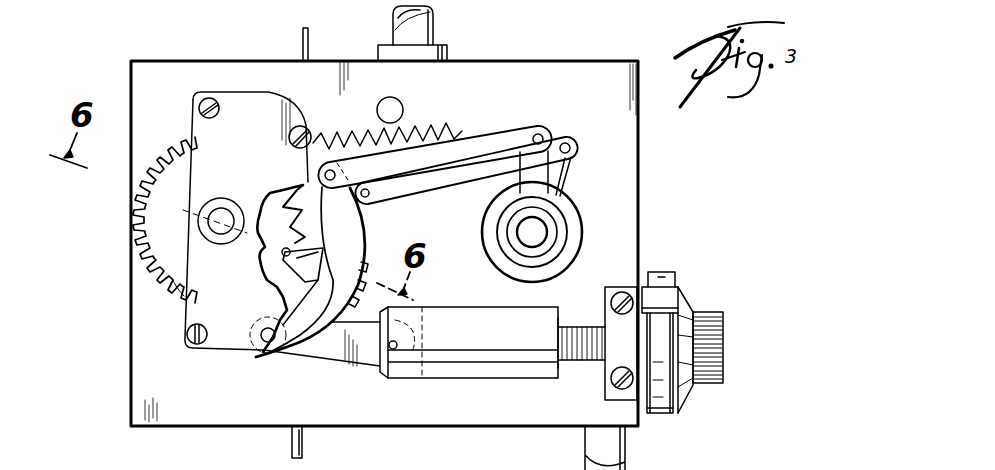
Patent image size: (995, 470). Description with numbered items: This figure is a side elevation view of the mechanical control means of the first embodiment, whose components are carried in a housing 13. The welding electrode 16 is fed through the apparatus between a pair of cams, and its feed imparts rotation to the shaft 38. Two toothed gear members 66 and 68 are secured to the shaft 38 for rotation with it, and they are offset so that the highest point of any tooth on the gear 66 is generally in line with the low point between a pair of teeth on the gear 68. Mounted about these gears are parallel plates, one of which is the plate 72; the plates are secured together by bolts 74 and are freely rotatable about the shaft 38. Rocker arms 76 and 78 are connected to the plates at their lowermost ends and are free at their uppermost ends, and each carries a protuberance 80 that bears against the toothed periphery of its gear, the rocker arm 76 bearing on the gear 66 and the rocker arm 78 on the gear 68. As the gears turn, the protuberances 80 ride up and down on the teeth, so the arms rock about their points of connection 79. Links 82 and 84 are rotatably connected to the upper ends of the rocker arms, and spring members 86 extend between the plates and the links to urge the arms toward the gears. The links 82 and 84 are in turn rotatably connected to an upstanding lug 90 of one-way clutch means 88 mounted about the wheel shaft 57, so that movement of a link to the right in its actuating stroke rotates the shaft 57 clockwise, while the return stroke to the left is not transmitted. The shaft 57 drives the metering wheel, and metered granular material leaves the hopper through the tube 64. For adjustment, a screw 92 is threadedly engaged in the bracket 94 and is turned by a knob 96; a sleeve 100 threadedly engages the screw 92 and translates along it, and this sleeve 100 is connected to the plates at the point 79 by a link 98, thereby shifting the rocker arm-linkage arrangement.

The housing 13 is at (560, 65).
The electrode 16 is at (305, 447).
The shaft 38 is at (222, 215).
The shaft 57 is at (539, 229).
The second tube 64 is at (628, 457).
The toothed gear member 66 is at (137, 200).
The toothed gear member 68 is at (140, 272).
The plate 72 is at (224, 288).
The bolt 74 is at (218, 106).
The rocker arm 76 is at (367, 246).
The rocker arm 78 is at (318, 309).
The point of connection 79 is at (268, 346).
The protuberance 80 is at (323, 249).
The link 82 is at (408, 190).
The link 84 is at (505, 135).
The spring member 86 is at (412, 128).
The clutch means 88 is at (560, 218).
The upstanding lug 90 is at (538, 181).
The screw 92 is at (578, 328).
The bracket 94 is at (610, 367).
The knob 96 is at (724, 332).
The link 98 is at (316, 352).
The sleeve 100 is at (478, 345).